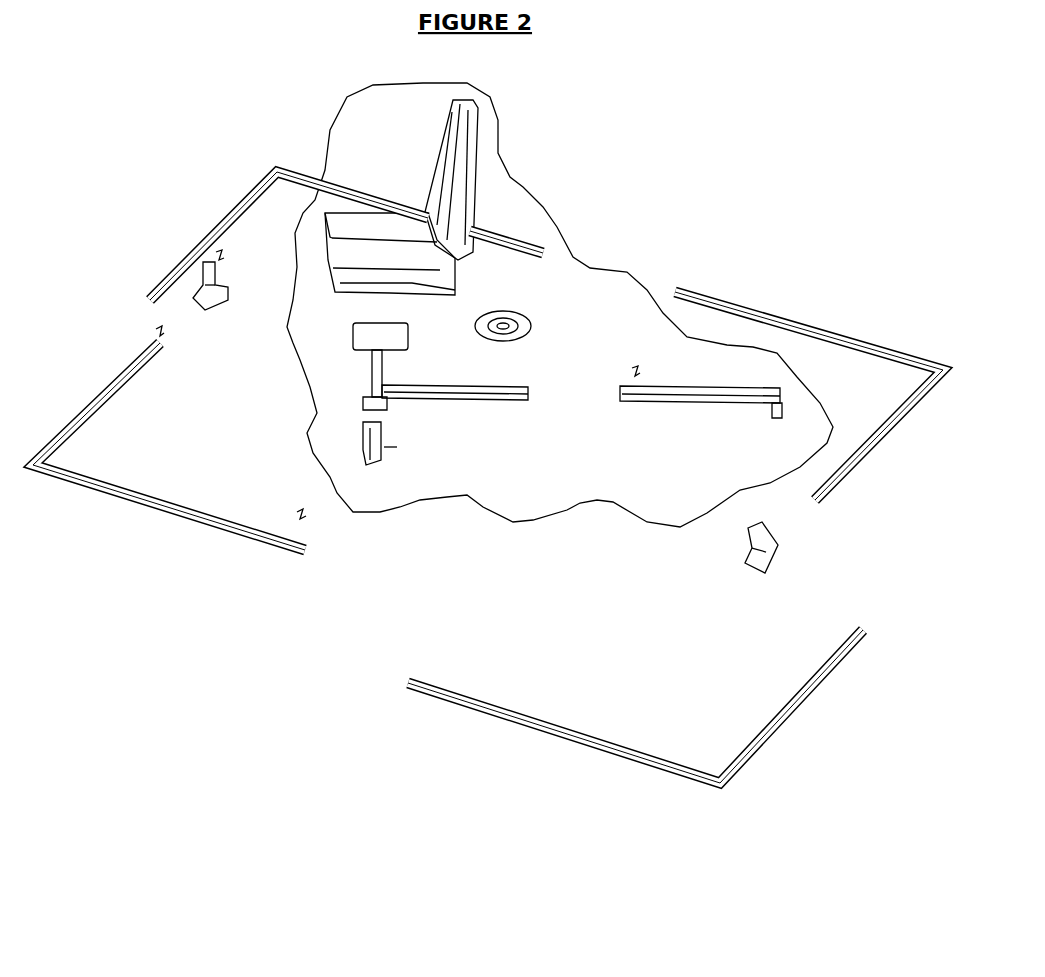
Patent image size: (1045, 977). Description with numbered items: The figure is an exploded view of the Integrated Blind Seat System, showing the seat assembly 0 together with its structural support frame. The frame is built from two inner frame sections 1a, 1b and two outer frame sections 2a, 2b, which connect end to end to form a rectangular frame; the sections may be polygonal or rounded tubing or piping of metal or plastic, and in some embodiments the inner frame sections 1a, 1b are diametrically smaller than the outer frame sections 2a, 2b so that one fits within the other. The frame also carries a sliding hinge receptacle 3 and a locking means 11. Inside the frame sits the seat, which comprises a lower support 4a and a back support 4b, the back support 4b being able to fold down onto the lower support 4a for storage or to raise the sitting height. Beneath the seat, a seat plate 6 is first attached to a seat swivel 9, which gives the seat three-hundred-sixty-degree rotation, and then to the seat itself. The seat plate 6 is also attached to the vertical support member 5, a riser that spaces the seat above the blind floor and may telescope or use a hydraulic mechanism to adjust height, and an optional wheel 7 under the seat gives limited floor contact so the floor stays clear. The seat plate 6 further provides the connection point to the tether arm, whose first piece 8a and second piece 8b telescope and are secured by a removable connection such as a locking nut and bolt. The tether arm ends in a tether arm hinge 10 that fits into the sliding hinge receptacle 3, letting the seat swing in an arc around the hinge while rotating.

The seat assembly 0 is at (443, 500).
The inner frame section 1a is at (268, 170).
The inner frame section 1b is at (577, 745).
The outer frame section 2a is at (868, 472).
The outer frame section 2b is at (95, 483).
The sliding hinge receptacle 3 is at (228, 296).
The lower support 4a is at (330, 262).
The back support 4b is at (452, 103).
The vertical support member 5 is at (371, 374).
The seat plate 6 is at (410, 336).
The wheel 7 is at (378, 463).
The first piece of tether arm 8a is at (525, 403).
The second piece of tether arm 8b is at (622, 403).
The seat swivel 9 is at (516, 340).
The tether arm hinge 10 is at (778, 418).
The locking means 11 is at (154, 338).